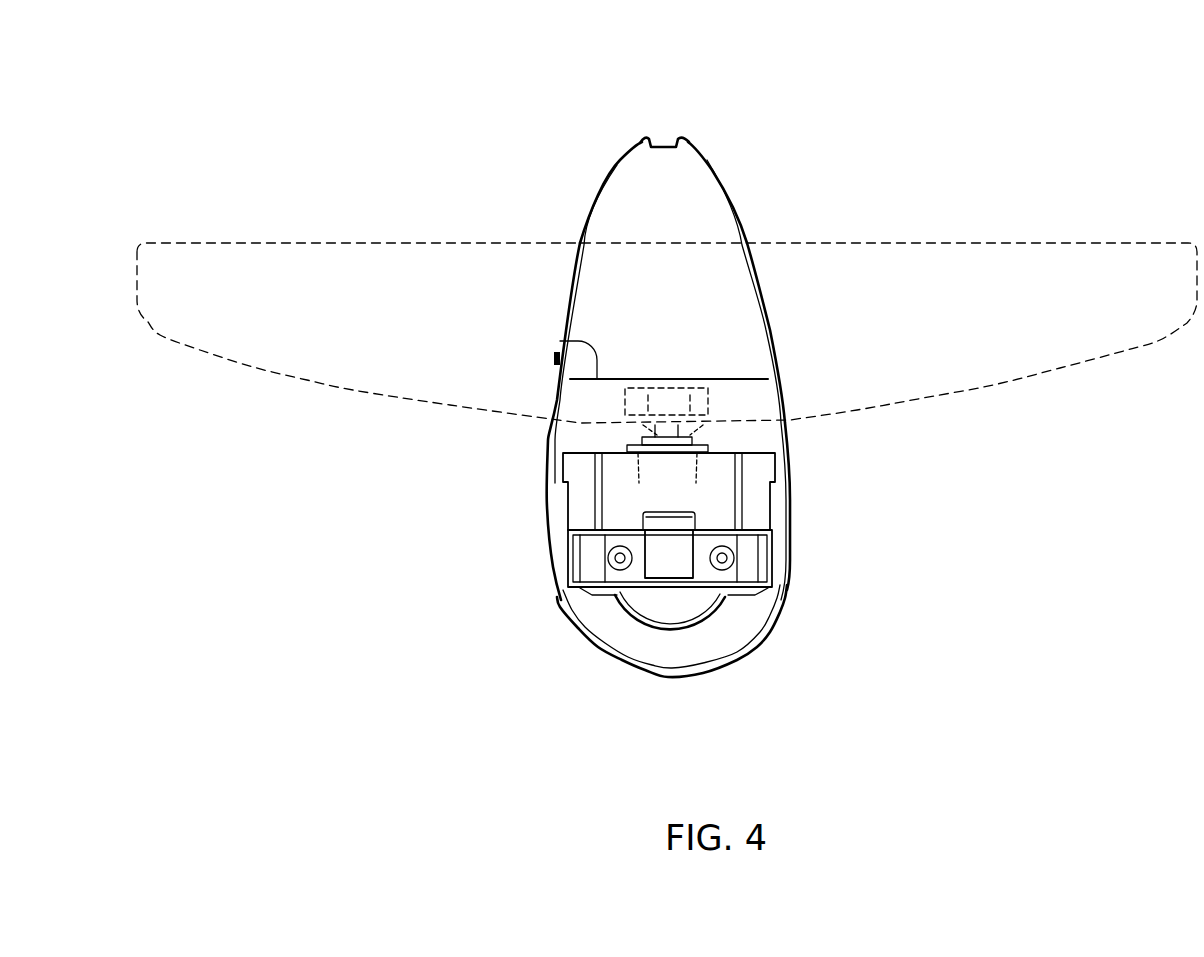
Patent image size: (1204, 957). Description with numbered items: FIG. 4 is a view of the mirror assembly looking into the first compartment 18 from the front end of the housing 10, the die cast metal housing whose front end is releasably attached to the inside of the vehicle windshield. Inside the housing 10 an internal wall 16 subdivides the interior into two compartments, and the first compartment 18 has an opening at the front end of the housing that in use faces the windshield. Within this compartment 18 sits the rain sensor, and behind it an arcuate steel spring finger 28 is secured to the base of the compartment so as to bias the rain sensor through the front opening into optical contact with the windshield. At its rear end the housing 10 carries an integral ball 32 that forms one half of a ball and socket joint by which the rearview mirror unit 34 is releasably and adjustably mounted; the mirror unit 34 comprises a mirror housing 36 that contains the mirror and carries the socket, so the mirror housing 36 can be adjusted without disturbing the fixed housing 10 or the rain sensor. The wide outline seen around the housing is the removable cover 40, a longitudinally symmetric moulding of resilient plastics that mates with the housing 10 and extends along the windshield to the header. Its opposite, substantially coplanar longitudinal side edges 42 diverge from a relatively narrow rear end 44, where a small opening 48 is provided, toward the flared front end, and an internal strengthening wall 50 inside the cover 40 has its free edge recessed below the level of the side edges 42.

The housing 10 is at (760, 636).
The internal wall 16 is at (757, 470).
The first compartment 18 is at (650, 606).
The arcuate steel spring finger 28 is at (672, 557).
The integral ball 32 is at (643, 405).
The rearview mirror unit 34 is at (909, 224).
The mirror housing 36 is at (705, 405).
The removable cover 40 is at (728, 280).
The longitudinal side edges 42 is at (568, 297).
The narrow rear end 44 is at (700, 147).
The small opening 48 is at (661, 137).
The internal strengthening wall 50 is at (560, 341).